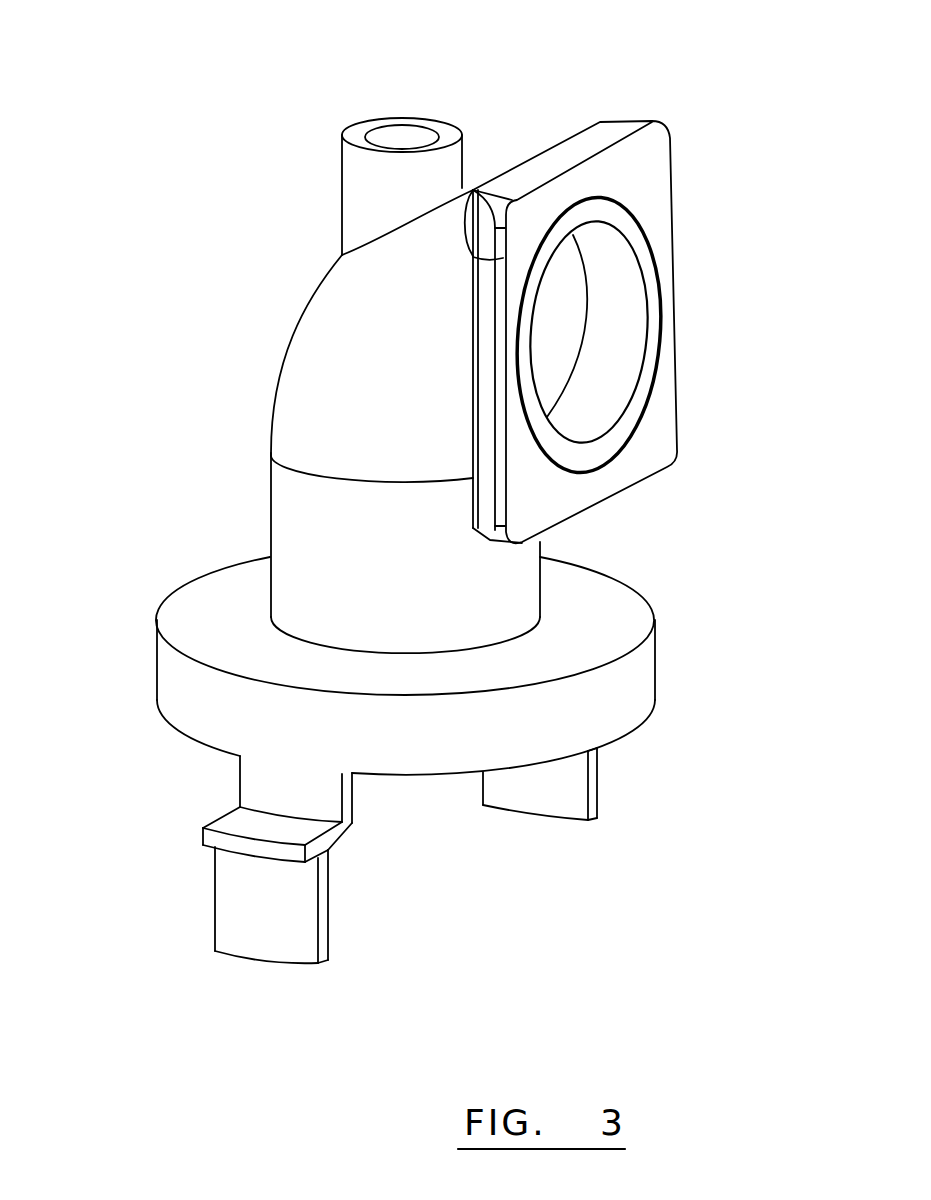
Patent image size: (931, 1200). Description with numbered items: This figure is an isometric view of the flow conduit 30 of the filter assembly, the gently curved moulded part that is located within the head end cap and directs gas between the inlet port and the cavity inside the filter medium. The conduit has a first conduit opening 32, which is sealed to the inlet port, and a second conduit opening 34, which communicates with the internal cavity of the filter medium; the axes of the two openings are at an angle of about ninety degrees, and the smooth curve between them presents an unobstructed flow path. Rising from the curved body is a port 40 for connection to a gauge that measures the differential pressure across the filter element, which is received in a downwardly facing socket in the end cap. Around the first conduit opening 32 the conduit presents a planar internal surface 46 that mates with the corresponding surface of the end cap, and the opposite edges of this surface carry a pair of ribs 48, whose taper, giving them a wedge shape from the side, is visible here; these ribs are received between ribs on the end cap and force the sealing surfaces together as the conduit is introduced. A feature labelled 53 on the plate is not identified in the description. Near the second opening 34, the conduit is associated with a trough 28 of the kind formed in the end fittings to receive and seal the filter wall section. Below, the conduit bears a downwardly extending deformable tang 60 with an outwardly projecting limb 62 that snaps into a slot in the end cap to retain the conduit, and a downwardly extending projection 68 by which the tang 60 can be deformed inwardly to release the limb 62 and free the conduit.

The trough 28 is at (213, 755).
The flow conduit 30 is at (283, 507).
The first conduit opening 32 is at (620, 320).
The second conduit opening 34 is at (492, 833).
The port 40 is at (368, 180).
The planar internal surface 46 is at (657, 438).
The ribs 48 is at (473, 190).
The ring 53 is at (652, 380).
The tang 60 is at (357, 822).
The limb 62 is at (242, 845).
The projection 68 is at (260, 960).